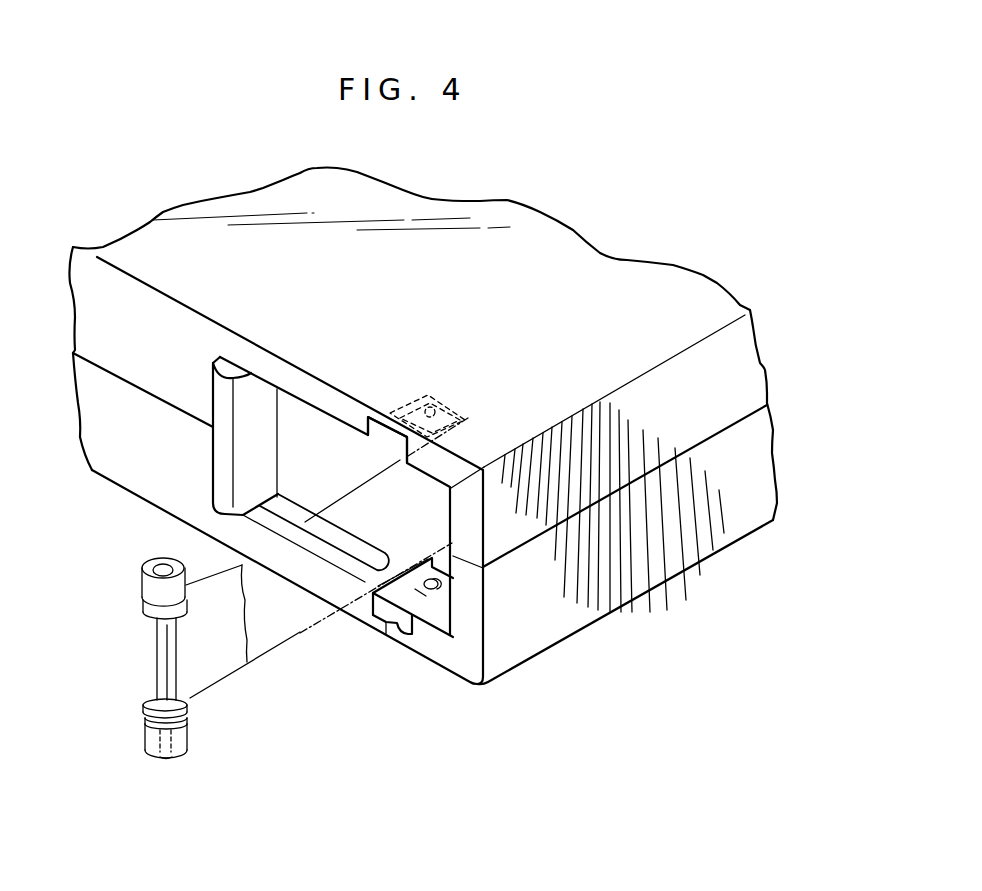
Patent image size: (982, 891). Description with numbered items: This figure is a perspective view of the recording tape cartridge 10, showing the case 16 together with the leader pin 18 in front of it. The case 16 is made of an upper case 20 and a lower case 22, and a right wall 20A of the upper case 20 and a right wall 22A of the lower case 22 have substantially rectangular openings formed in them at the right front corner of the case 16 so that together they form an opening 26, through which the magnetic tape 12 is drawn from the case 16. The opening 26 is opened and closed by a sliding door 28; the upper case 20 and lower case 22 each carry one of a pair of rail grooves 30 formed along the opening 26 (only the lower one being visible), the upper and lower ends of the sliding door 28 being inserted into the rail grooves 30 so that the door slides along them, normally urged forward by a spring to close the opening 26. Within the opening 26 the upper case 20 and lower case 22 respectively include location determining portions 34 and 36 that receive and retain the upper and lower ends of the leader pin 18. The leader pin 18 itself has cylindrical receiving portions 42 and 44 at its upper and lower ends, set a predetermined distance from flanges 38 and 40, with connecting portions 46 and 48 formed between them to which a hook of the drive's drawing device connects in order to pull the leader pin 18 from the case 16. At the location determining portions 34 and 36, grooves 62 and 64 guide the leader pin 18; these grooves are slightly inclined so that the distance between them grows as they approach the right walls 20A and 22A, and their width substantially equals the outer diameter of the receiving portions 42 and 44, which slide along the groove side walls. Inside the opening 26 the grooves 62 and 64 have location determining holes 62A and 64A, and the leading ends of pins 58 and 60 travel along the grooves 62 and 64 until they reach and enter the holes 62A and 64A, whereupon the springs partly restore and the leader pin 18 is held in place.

The battery pack assembly 10 is at (597, 187).
The magnetic tape 12 is at (227, 662).
The case 16 is at (444, 426).
The leader pin 18 is at (123, 579).
The upper case 20 is at (735, 371).
The lower case 22 is at (760, 477).
The right wall of the upper case 20A is at (107, 335).
The right wall of the lower case 22A is at (97, 425).
The opening 26 is at (342, 610).
The sliding door 28 is at (223, 467).
The rail grooves 30 is at (343, 548).
The location determining portion 34 is at (399, 448).
The location determining portion 36 is at (380, 628).
The flange 38 is at (153, 613).
The flange 40 is at (147, 702).
The receiving portion 42 is at (148, 589).
The receiving portion 44 is at (145, 742).
The connecting portion 46 is at (165, 622).
The connecting portion 48 is at (190, 725).
The pin 58 is at (165, 563).
The pin 60 is at (173, 762).
The groove 62 is at (397, 440).
The location determining hole 62A is at (445, 399).
The groove 64 is at (403, 623).
The location determining hole 64A is at (437, 584).